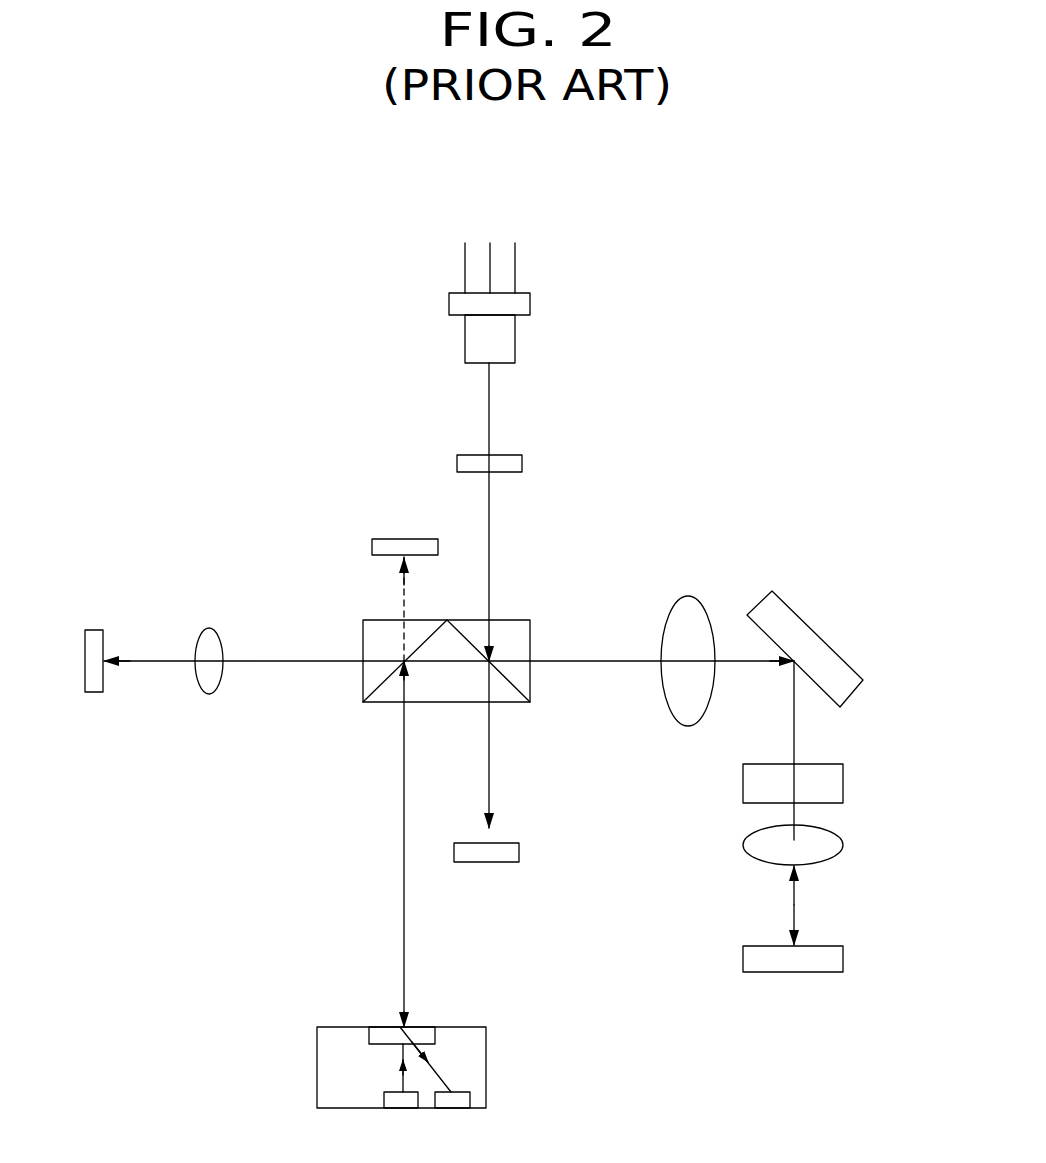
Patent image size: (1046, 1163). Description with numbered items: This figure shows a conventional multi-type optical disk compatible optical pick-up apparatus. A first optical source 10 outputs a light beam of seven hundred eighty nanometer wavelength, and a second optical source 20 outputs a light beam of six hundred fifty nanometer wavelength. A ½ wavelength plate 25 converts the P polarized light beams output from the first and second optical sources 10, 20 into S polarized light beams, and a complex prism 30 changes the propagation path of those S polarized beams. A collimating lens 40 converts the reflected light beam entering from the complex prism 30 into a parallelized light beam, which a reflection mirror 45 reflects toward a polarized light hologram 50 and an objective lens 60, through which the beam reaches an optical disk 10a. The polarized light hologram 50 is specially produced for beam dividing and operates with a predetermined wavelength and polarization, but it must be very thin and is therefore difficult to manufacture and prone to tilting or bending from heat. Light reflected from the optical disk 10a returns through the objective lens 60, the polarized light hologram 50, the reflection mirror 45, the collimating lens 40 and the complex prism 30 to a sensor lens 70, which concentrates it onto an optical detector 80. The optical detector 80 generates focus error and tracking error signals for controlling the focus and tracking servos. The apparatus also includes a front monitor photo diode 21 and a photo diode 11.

The second optical source 20 is at (530, 303).
The ½ wavelength plate 25 is at (522, 463).
The photo diode 11 is at (372, 547).
The complex prism 30 is at (520, 620).
The optical detector 80 is at (95, 630).
The sensor lens 70 is at (209, 628).
The collimating lens 40 is at (687, 596).
The reflection mirror 45 is at (863, 680).
The polarized light hologram 50 is at (843, 780).
The objective lens 60 is at (843, 845).
The optical disk 10a is at (843, 958).
The front monitor photo diode 21 is at (519, 850).
The first optical source 10 is at (497, 1077).